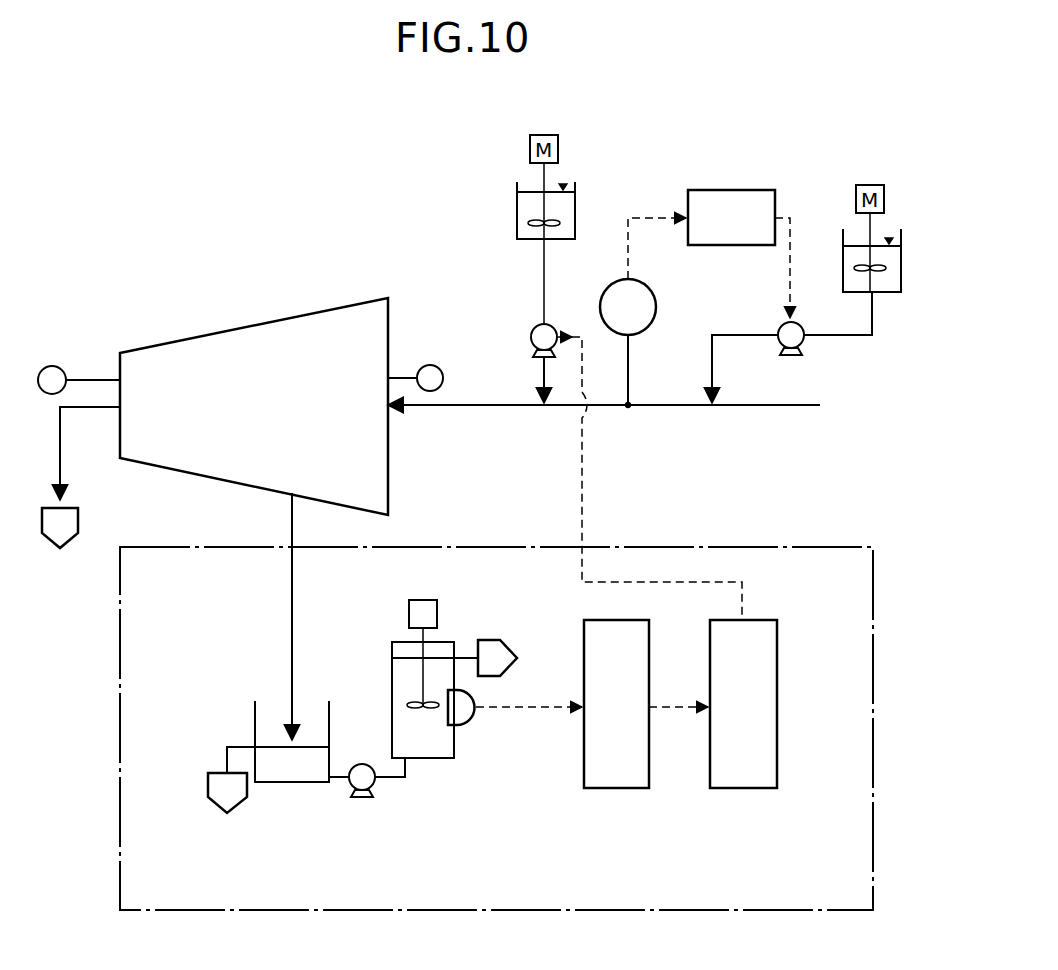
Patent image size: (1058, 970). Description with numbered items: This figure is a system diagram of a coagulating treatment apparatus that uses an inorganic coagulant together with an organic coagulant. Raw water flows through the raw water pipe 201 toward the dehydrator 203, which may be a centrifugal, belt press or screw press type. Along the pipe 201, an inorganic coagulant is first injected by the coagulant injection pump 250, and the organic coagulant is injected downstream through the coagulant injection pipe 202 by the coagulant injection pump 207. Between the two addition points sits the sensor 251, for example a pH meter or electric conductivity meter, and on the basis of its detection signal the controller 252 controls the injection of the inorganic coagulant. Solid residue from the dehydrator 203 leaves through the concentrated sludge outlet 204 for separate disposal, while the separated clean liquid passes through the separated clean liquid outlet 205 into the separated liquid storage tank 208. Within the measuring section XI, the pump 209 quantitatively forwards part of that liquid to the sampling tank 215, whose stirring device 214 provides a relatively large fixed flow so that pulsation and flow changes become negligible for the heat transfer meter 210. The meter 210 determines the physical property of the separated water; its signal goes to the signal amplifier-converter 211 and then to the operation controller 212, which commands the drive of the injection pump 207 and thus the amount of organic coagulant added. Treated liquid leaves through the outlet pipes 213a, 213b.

The raw water pipe 201 is at (688, 407).
The coagulant injection pipe 202 is at (544, 374).
The centrifugal dehydrator 203 is at (246, 326).
The concentrated sludge outlet 204 is at (62, 477).
The separated clean liquid outlet 205 is at (292, 518).
The coagulant injection pump 207 is at (532, 334).
The separated liquid storage tank 208 is at (292, 784).
The pump 209 is at (356, 766).
The heat transfer meter 210 is at (470, 726).
The signal amplifier-converter 211 is at (617, 620).
The operation controller 212 is at (763, 598).
The outlet pipe for treated liquid 213a is at (226, 752).
The outlet pipe for treated liquid 213b is at (490, 640).
The stirring device 214 is at (409, 616).
The sampling tank 215 is at (425, 760).
The coagulant injection pump 250 is at (782, 328).
The sensor 251 is at (648, 283).
The controller 252 is at (745, 190).
The measuring apparatus XI is at (418, 910).